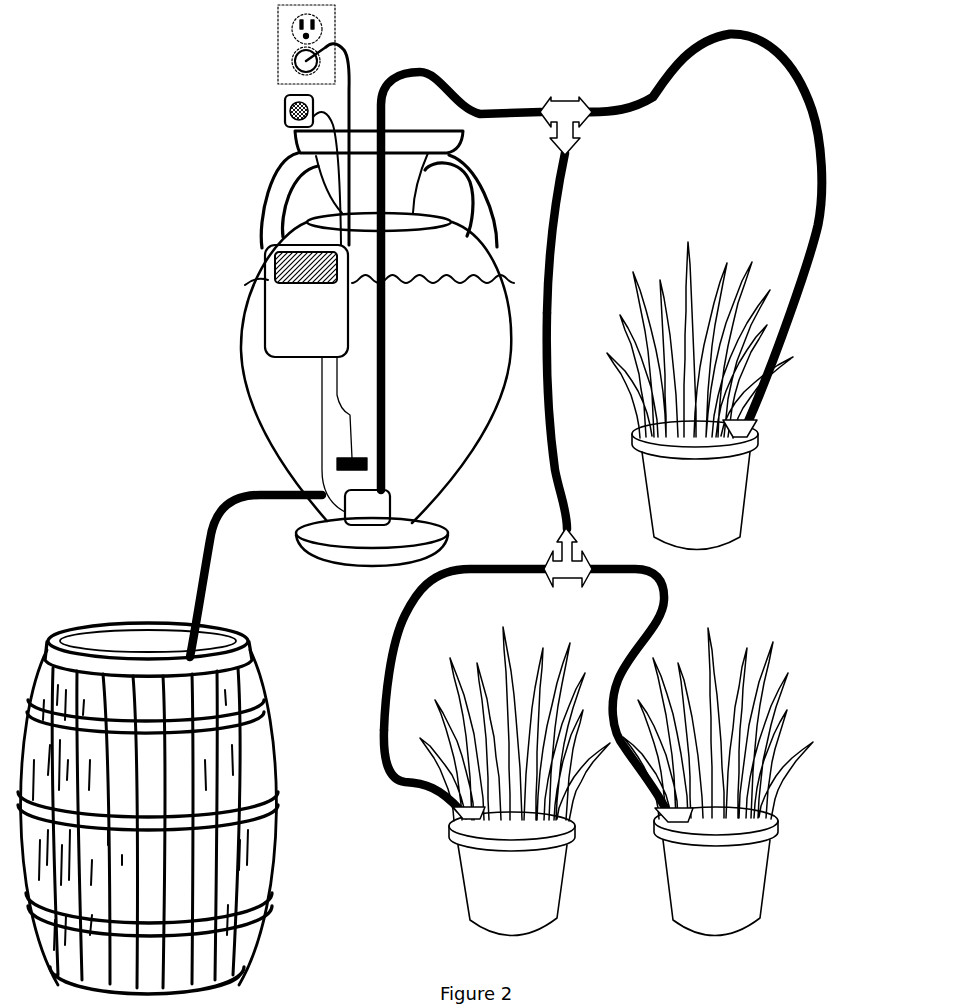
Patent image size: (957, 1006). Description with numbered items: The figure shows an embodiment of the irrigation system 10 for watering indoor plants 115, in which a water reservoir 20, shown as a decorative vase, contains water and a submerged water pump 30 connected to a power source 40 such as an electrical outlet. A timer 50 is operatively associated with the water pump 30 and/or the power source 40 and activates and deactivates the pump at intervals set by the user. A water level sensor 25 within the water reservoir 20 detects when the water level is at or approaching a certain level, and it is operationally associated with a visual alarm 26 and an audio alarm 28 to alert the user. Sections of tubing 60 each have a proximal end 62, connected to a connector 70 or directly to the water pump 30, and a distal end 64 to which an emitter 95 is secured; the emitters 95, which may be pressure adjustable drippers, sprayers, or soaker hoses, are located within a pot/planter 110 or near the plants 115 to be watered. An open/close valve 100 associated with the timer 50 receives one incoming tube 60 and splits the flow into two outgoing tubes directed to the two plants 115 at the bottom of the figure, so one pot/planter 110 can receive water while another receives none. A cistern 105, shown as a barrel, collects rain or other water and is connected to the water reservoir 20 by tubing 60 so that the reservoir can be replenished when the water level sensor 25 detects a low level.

The irrigation system 10 is at (228, 199).
The water reservoir 20 is at (293, 388).
The water level sensor 25 is at (338, 462).
The visual alarm 26 is at (284, 112).
The audio alarm 28 is at (278, 270).
The water pump 30 is at (344, 513).
The power source 40 is at (293, 28).
The timer 50 is at (268, 305).
The tubing 60 is at (197, 573).
The proximal end 62 is at (607, 120).
The distal end 64 is at (560, 495).
The connector 70 is at (580, 95).
The emitter 95 is at (757, 427).
The open/close valve 100 is at (566, 100).
The cistern 105 is at (122, 648).
The pot/planter 110 is at (700, 487).
The indoor plant 115 is at (682, 397).